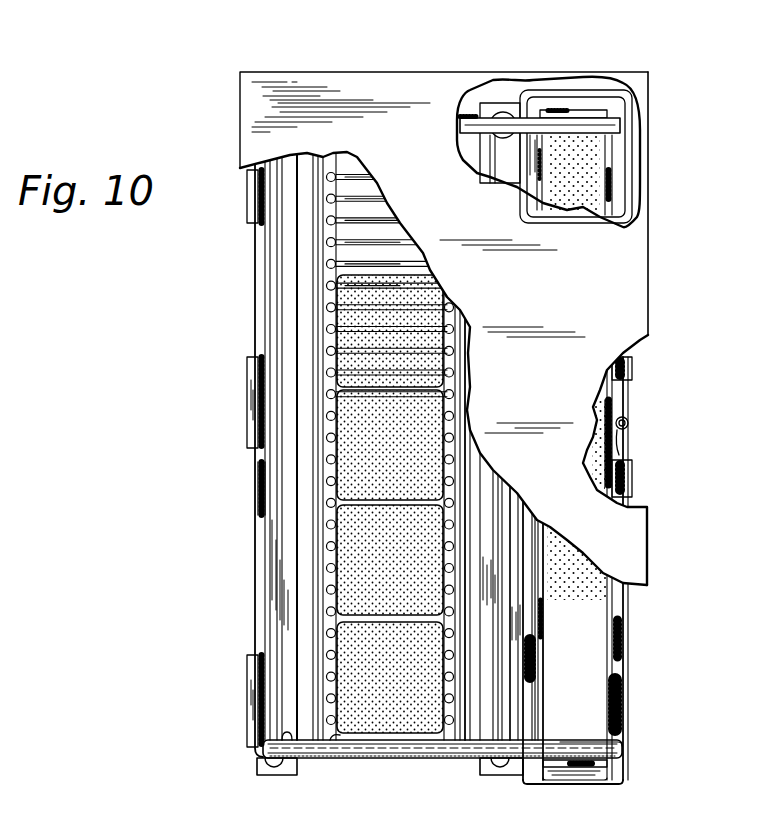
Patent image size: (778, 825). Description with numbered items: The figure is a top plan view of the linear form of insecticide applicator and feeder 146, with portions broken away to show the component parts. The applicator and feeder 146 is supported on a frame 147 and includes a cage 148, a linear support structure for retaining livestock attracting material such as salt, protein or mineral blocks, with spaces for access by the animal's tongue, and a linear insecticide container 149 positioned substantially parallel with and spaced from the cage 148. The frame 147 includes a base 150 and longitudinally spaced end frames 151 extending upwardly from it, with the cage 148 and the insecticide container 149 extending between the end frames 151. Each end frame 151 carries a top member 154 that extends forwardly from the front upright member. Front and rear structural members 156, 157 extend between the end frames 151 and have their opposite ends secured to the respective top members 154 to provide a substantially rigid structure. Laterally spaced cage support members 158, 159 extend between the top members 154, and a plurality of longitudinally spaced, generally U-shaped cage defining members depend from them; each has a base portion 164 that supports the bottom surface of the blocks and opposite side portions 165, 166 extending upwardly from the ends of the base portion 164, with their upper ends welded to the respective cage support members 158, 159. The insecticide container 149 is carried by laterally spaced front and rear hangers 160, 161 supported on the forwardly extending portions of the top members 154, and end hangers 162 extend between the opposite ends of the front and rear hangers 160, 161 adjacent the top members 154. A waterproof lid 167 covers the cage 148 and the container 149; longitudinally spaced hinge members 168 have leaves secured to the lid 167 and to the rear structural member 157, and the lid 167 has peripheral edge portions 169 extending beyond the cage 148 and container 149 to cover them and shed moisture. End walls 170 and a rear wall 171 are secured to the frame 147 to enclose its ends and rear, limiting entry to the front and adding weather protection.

The insecticide applicator and feeder 146 is at (648, 72).
The frame 147 is at (262, 764).
The cage 148 is at (331, 748).
The linear insecticide container 149 is at (630, 370).
The base 150 is at (497, 773).
The end frames 151 is at (478, 763).
The top member 154 is at (591, 741).
The front structural member 156 is at (510, 507).
The rear structural member 157 is at (276, 588).
The cage support member 158 is at (464, 372).
The cage support member 159 is at (315, 535).
The front hanger 160 is at (600, 665).
The rear hanger 161 is at (544, 652).
The end hangers 162 is at (575, 120).
The base portion 164 is at (366, 222).
The side portion 165 is at (456, 293).
The side portion 166 is at (332, 165).
The lid 167 is at (390, 72).
The hinge members 168 is at (251, 382).
The peripheral edge portions 169 is at (648, 290).
The end walls 170 is at (397, 760).
The rear wall 171 is at (262, 460).